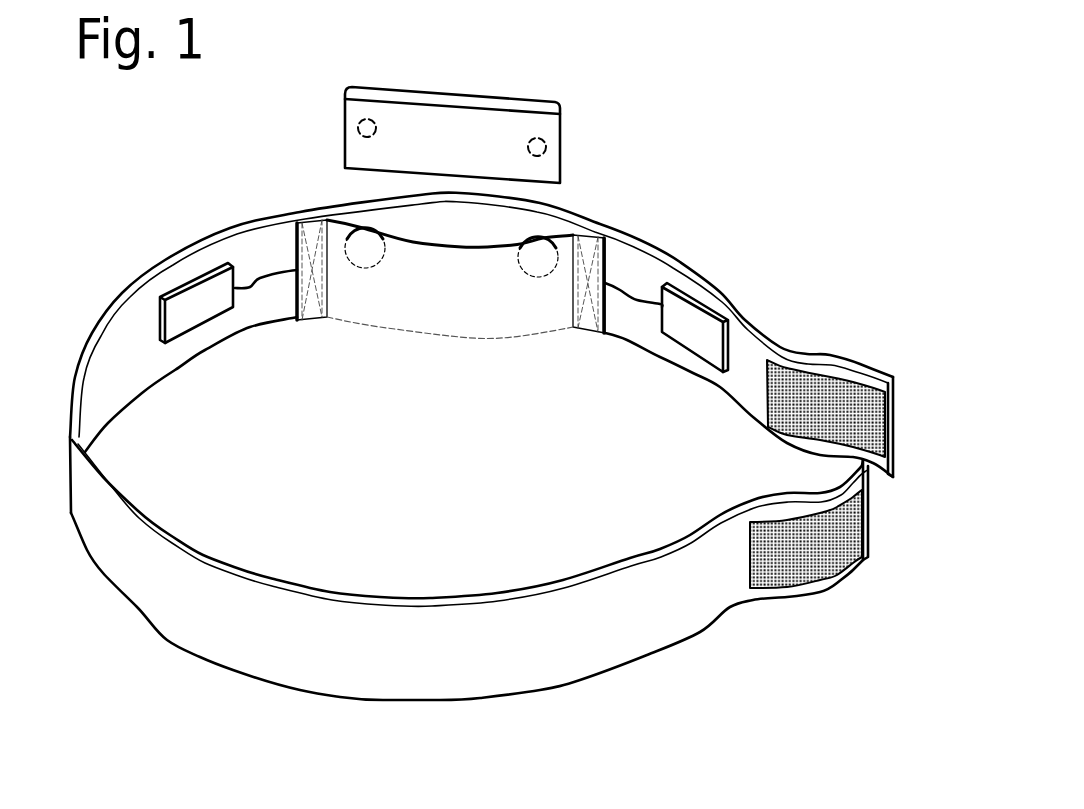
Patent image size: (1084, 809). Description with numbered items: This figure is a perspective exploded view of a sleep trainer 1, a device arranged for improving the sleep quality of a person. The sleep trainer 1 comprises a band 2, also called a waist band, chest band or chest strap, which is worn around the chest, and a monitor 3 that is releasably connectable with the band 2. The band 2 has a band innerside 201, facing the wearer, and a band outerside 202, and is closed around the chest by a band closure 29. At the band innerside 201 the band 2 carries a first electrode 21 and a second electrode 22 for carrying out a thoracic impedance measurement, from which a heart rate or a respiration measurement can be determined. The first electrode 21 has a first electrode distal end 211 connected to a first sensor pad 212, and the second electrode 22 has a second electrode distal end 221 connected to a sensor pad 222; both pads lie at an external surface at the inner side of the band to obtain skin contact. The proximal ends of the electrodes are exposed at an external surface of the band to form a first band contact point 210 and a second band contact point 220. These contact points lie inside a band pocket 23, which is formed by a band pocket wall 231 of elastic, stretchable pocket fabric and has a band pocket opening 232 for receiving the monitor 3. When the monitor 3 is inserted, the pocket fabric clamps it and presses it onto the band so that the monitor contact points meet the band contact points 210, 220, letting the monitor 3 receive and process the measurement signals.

The sleep trainer 1 is at (735, 631).
The band 2 is at (628, 612).
The monitor 3 is at (503, 102).
The band innerside 201 is at (122, 365).
The band outerside 202 is at (448, 665).
The first electrode 21 is at (283, 270).
The second electrode 22 is at (640, 301).
The band pocket 23 is at (465, 261).
The band closure 29 is at (873, 422).
The first band contact point 210 is at (370, 257).
The second band contact point 220 is at (537, 267).
The first electrode distal end 211 is at (247, 293).
The first sensor pad 212 is at (185, 302).
The second electrode distal end 221 is at (643, 313).
The sensor pad 222 is at (715, 327).
The band pocket wall 231 is at (450, 287).
The band pocket opening 232 is at (418, 233).